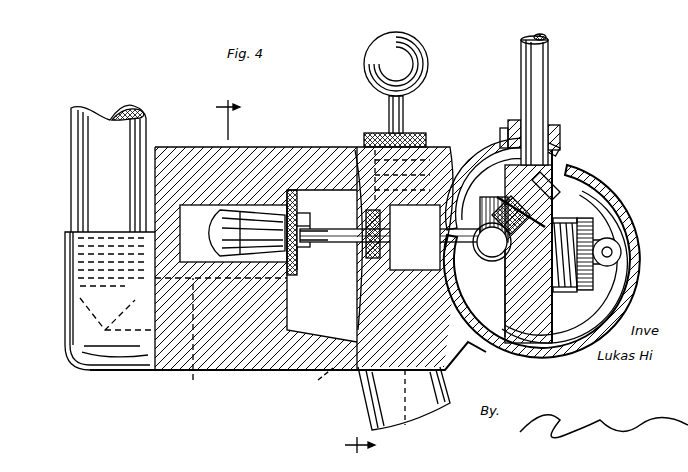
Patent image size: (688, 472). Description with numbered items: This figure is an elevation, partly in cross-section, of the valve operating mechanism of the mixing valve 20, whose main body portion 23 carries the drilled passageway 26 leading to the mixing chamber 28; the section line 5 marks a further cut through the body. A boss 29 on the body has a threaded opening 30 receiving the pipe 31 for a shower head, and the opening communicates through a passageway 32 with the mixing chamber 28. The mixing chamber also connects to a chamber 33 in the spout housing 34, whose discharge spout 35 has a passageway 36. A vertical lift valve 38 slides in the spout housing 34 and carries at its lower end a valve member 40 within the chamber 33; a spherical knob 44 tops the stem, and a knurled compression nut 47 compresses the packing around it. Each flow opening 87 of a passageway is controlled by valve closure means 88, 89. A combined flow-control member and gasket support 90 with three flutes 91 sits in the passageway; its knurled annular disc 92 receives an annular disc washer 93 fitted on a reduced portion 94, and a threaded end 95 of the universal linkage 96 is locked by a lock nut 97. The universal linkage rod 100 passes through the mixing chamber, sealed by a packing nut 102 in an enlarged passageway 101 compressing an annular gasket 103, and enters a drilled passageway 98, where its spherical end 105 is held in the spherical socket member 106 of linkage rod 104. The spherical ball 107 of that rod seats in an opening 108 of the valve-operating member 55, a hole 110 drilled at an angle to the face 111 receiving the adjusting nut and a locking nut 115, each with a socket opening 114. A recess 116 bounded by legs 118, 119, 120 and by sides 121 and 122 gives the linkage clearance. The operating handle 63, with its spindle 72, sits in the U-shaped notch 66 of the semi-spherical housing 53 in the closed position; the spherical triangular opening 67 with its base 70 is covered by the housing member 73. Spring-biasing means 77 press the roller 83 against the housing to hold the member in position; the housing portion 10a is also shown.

The section line 5 is at (295, 269).
The housing 10a is at (457, 165).
The mixing valve 20 is at (295, 148).
The main body portion 23 is at (190, 160).
The drilled passageway 26 is at (203, 208).
The mixing chamber 28 is at (268, 371).
The boss 29 is at (118, 369).
The threaded opening 30 is at (75, 250).
The pipe 31 is at (95, 172).
The passageway 32 is at (221, 337).
The chamber 33 is at (415, 308).
The spout housing 34 is at (445, 147).
The discharge spout 35 is at (362, 415).
The passageway 36 is at (410, 421).
The vertical lift valve 38 is at (404, 98).
The valve member 40 is at (317, 380).
The spherical knob 44 is at (404, 40).
The compression nut 47 is at (380, 135).
The semi-spherical housing 53 is at (622, 208).
The valve-operating member 55 is at (552, 320).
The operating handle 63 is at (548, 70).
The U-shaped notch 66 is at (503, 128).
The spherical triangular opening 67 is at (565, 150).
The base 70 is at (590, 170).
The spindle 72 is at (545, 35).
The housing member 73 is at (575, 172).
The spring-biasing means 77 is at (578, 291).
The roller 83 is at (617, 243).
The flow opening 87 is at (288, 200).
The valve closure means 88 is at (373, 234).
The valve closure means 89 is at (338, 245).
The combined flow-control member and gasket support 90 is at (222, 233).
The flutes 91 is at (243, 262).
The knurled annular disc 92 is at (300, 206).
The annular disc washer 93 is at (296, 278).
The reduced portion 94 is at (311, 218).
The threaded end 95 is at (312, 239).
The universal linkage 96 is at (409, 247).
The lock nut 97 is at (305, 253).
The drilled passageway 98 is at (424, 234).
The universal linkage rod 100 is at (365, 262).
The enlarged passageway 101 is at (357, 290).
The packing nut 102 is at (357, 147).
The annular gasket 103 is at (357, 300).
The linkage rod 104 is at (418, 226).
The spherical end 105 is at (405, 249).
The spherical socket member 106 is at (405, 187).
The spherical ball 107 is at (449, 269).
The opening 108 is at (496, 271).
The hole 110 is at (482, 196).
The face 111 is at (570, 168).
The socket opening 114 is at (560, 130).
The nut 115 is at (600, 180).
The recess 116 is at (475, 343).
The leg 118 is at (446, 256).
The leg 119 is at (492, 356).
The leg 120 is at (415, 162).
The side of the recess 121 is at (530, 359).
The third side of the recess 122 is at (462, 312).